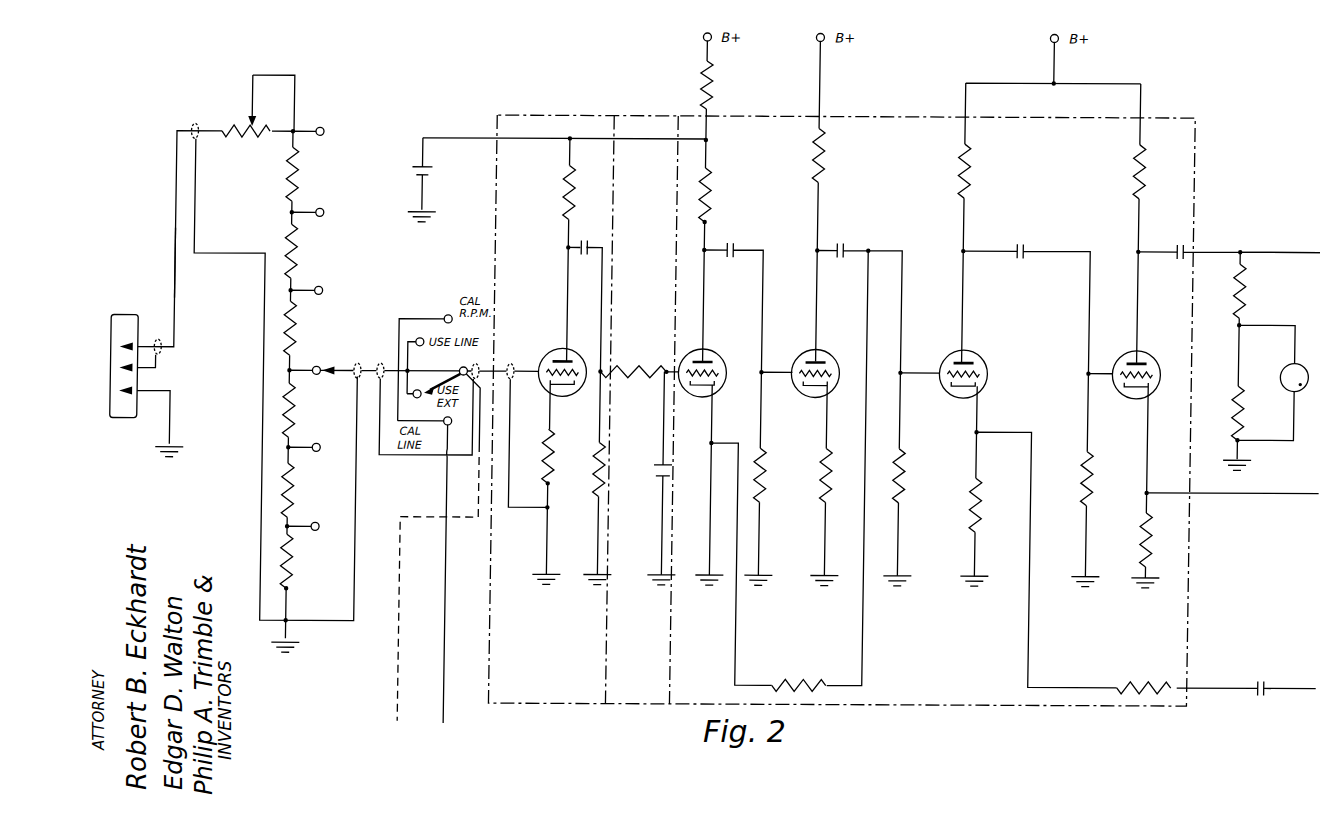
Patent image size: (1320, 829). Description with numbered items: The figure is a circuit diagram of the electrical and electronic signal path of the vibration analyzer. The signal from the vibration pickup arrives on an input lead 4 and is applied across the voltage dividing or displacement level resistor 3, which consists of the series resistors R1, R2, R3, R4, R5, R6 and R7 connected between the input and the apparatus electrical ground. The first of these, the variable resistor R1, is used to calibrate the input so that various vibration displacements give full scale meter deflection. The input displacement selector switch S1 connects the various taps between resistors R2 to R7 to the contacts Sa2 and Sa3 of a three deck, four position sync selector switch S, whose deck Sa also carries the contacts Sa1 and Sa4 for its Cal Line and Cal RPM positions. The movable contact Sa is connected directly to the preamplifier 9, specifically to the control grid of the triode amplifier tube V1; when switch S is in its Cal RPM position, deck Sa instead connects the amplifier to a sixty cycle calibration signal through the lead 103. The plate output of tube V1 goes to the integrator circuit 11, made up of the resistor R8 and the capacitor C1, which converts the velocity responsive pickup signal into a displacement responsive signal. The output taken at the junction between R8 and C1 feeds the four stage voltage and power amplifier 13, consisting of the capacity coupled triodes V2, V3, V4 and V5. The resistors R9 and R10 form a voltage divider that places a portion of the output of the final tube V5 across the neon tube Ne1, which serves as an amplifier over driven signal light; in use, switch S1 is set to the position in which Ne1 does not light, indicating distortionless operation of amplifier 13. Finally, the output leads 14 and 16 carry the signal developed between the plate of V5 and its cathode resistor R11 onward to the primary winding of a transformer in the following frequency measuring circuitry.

The variable resistor R1 is at (248, 130).
The resistor R2 is at (288, 180).
The resistor R3 is at (296, 246).
The resistor R4 is at (296, 324).
The resistor R5 is at (296, 406).
The resistor R6 is at (296, 478).
The resistor R7 is at (296, 552).
The resistor R8 is at (636, 370).
The resistor R9 is at (1244, 284).
The resistor R10 is at (1244, 406).
The cathode resistor R11 is at (1152, 516).
The voltage dividing or displacement level resistor 3 is at (292, 590).
The input lead 4 is at (174, 278).
The sync selector switch S is at (410, 518).
The input displacement selector switch S1 is at (338, 370).
The movable contact Sa is at (445, 380).
The contact of switch S Sa1 is at (455, 420).
The contact of switch S Sa2 is at (420, 390).
The contact of switch S Sa3 is at (417, 338).
The contact of switch S Sa4 is at (447, 316).
The lead 103 is at (448, 630).
The preamplifier 9 is at (550, 116).
The integrator circuit 11 is at (645, 116).
The four stage voltage and power amplifier 13 is at (754, 116).
The triode amplifier tube V1 is at (556, 352).
The amplifier triode V2 is at (716, 360).
The amplifier triode V3 is at (828, 358).
The amplifier triode V4 is at (982, 364).
The final amplifier tube V5 is at (1157, 362).
The capacitor C1 is at (656, 461).
The neon tube Ne1 is at (1284, 366).
The output lead 14 is at (1288, 250).
The output lead 16 is at (1310, 491).